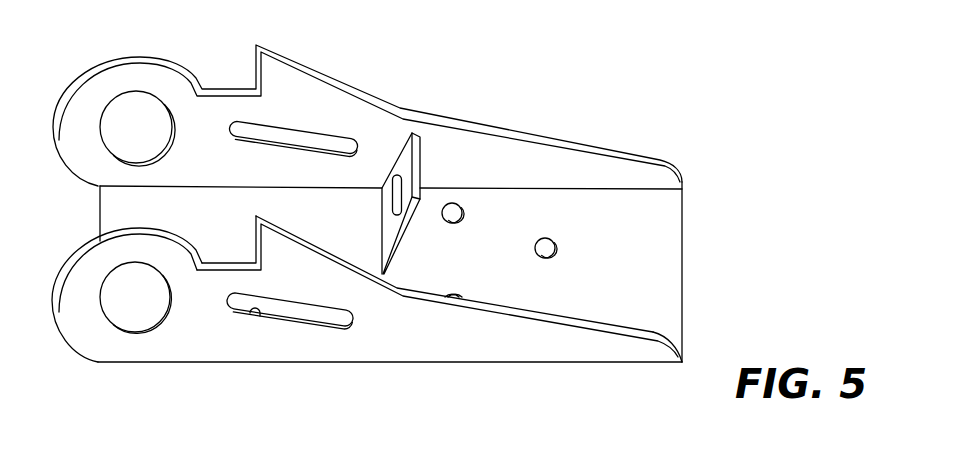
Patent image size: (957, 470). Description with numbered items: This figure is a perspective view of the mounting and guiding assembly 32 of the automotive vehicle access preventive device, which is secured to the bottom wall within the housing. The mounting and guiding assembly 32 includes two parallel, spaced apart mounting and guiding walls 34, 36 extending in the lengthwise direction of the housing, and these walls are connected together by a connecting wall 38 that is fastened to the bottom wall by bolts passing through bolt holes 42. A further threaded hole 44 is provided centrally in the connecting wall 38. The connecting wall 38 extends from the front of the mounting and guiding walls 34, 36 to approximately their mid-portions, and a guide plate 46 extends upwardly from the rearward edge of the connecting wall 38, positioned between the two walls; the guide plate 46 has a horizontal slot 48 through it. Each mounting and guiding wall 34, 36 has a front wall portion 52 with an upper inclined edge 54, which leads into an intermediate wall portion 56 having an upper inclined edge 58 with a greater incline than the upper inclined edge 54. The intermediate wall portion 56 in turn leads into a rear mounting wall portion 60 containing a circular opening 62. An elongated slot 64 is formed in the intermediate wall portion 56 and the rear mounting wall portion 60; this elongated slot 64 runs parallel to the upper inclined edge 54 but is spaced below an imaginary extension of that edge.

The mounting and guiding assembly 32 is at (497, 112).
The mounting and guiding wall 34 is at (312, 341).
The mounting and guiding wall 36 is at (224, 118).
The connecting wall 38 is at (666, 256).
The bolt hole 42 is at (463, 219).
The threaded hole 44 is at (557, 243).
The guide plate 46 is at (420, 148).
The horizontal slot 48 is at (392, 200).
The front wall portion 52 is at (583, 345).
The upper inclined edge 54 is at (660, 324).
The intermediate wall portion 56 is at (347, 323).
The upper inclined edge 58 is at (290, 236).
The rear mounting wall portion 60 is at (172, 332).
The circular opening 62 is at (117, 310).
The elongated slot 64 is at (250, 313).